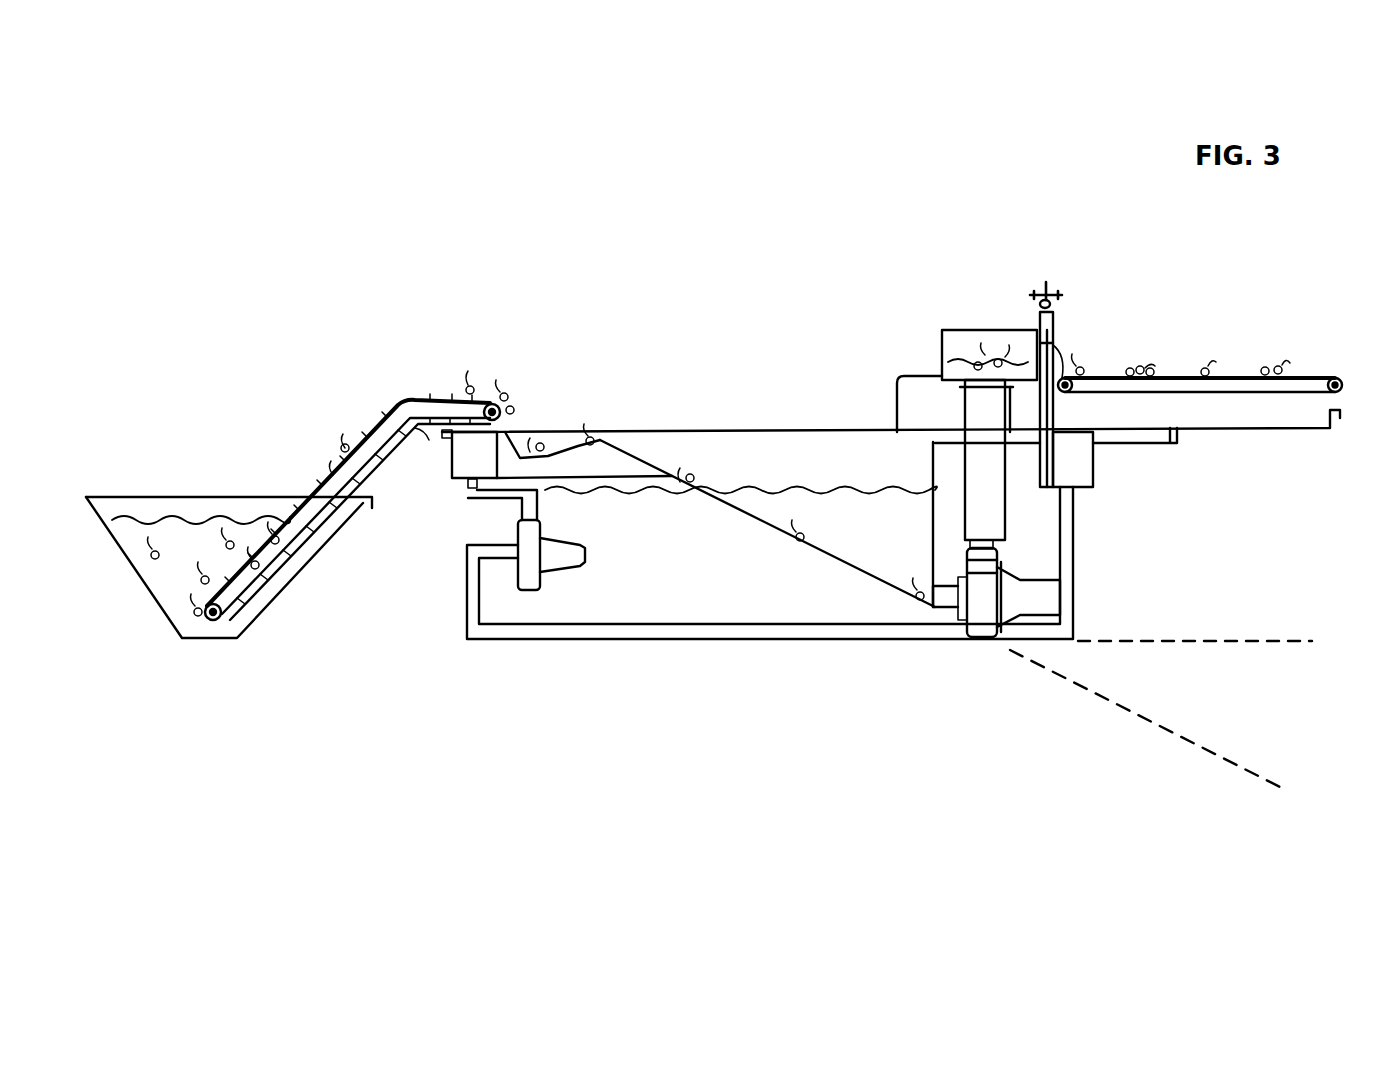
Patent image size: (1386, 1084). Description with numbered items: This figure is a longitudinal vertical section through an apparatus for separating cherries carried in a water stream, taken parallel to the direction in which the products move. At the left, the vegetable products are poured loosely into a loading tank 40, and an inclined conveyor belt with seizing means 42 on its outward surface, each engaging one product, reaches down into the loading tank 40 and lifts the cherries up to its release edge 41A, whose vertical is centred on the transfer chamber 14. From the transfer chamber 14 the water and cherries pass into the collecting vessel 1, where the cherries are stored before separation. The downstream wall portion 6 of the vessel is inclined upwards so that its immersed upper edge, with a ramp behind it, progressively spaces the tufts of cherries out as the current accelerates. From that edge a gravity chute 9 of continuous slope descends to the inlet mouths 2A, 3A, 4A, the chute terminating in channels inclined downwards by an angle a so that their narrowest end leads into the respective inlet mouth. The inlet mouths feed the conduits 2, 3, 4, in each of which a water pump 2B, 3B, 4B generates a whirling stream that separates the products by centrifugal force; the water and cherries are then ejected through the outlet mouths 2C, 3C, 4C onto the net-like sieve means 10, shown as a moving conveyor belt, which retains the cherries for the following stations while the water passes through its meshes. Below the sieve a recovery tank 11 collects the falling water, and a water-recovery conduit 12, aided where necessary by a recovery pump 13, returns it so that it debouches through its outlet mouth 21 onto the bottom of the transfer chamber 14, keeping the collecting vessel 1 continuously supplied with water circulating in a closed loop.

The collecting vessel 1 is at (555, 375).
The downstream wall portion 6 is at (560, 438).
The chute 9 is at (823, 560).
The net-like sieve means 10 is at (1203, 373).
The recovery tank 11 is at (1068, 467).
The water-recovery conduit 12 is at (640, 632).
The recovery pump 13 is at (531, 577).
The transfer chamber 14 is at (462, 458).
The outlet mouth 21 is at (466, 488).
The loading tank 40 is at (178, 585).
The release edge 41A is at (502, 396).
The seizing means 42 is at (370, 429).
The conduit 2 is at (1068, 493).
The conduit 3 is at (1068, 493).
The conduit 4 is at (985, 513).
The inlet mouth 2A is at (904, 678).
The inlet mouth 3A is at (904, 678).
The inlet mouth 4A is at (938, 600).
The water pump 2B is at (1120, 590).
The water pump 3B is at (1120, 590).
The water pump 4B is at (985, 543).
The outlet mouth 2C is at (842, 379).
The outlet mouth 3C is at (842, 379).
The outlet mouth 4C is at (958, 385).
The inclination angle a is at (1232, 646).